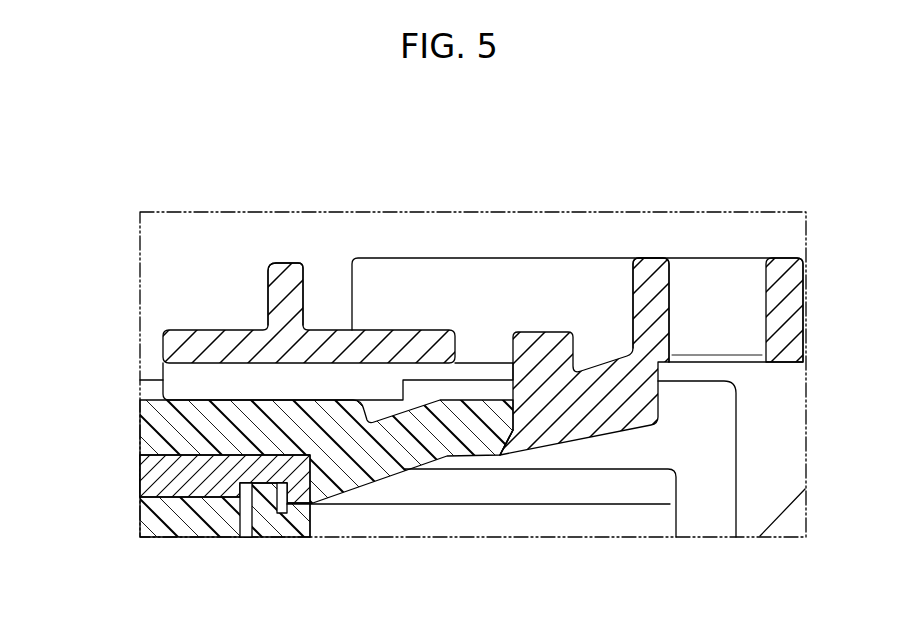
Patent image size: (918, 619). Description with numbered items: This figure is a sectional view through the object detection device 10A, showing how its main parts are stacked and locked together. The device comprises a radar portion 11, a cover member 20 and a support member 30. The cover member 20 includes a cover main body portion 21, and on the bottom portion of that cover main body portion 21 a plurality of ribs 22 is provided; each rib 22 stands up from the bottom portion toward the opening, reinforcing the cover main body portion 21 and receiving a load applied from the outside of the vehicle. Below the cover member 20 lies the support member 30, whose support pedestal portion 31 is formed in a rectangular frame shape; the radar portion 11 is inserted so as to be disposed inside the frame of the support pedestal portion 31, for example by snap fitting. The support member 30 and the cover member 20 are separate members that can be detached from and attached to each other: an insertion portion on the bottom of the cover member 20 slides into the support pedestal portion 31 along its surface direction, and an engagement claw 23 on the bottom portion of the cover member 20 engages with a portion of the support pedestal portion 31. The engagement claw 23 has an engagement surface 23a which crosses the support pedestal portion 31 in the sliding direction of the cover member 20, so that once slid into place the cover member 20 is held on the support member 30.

The object detection device 10A is at (167, 192).
The cover member 20 is at (228, 232).
The cover main body portion 21 is at (568, 230).
The rib 22 is at (290, 273).
The engagement claw 23 is at (548, 428).
The engagement surface 23a is at (513, 418).
The support member 30 is at (141, 432).
The radar portion 11 is at (152, 478).
The support pedestal portion 31 is at (295, 440).